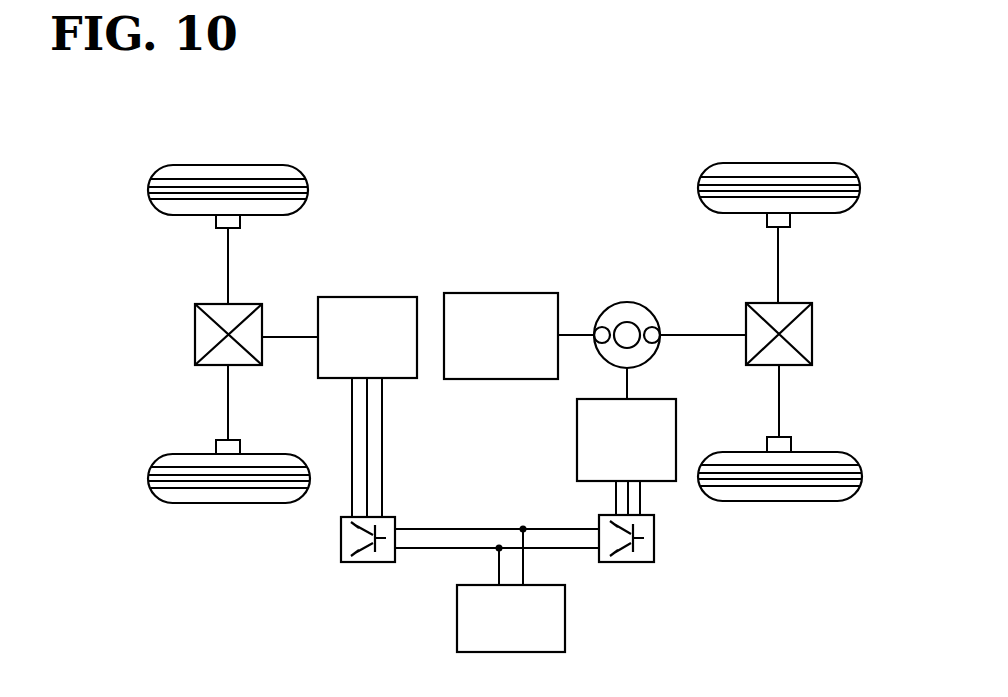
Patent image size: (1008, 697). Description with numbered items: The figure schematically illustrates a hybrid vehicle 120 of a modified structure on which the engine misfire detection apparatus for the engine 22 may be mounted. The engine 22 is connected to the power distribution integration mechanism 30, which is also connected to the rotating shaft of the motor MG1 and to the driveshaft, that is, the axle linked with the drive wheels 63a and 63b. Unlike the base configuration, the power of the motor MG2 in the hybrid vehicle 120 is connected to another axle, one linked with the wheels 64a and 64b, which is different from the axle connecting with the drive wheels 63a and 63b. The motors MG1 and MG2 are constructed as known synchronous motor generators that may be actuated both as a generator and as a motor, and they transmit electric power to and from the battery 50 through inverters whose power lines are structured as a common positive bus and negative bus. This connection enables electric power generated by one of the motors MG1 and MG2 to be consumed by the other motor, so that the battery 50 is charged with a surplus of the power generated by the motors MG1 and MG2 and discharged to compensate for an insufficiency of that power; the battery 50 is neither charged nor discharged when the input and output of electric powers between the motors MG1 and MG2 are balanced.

The hybrid vehicle 120 is at (528, 142).
The wheel 64a is at (228, 165).
The wheel 64b is at (229, 503).
The drive wheel 63a is at (778, 163).
The drive wheel 63b is at (780, 501).
The motor MG2 is at (365, 297).
The motor MG1 is at (577, 439).
The engine 22 is at (502, 293).
The power distribution integration mechanism 30 is at (630, 302).
The battery 50 is at (565, 618).